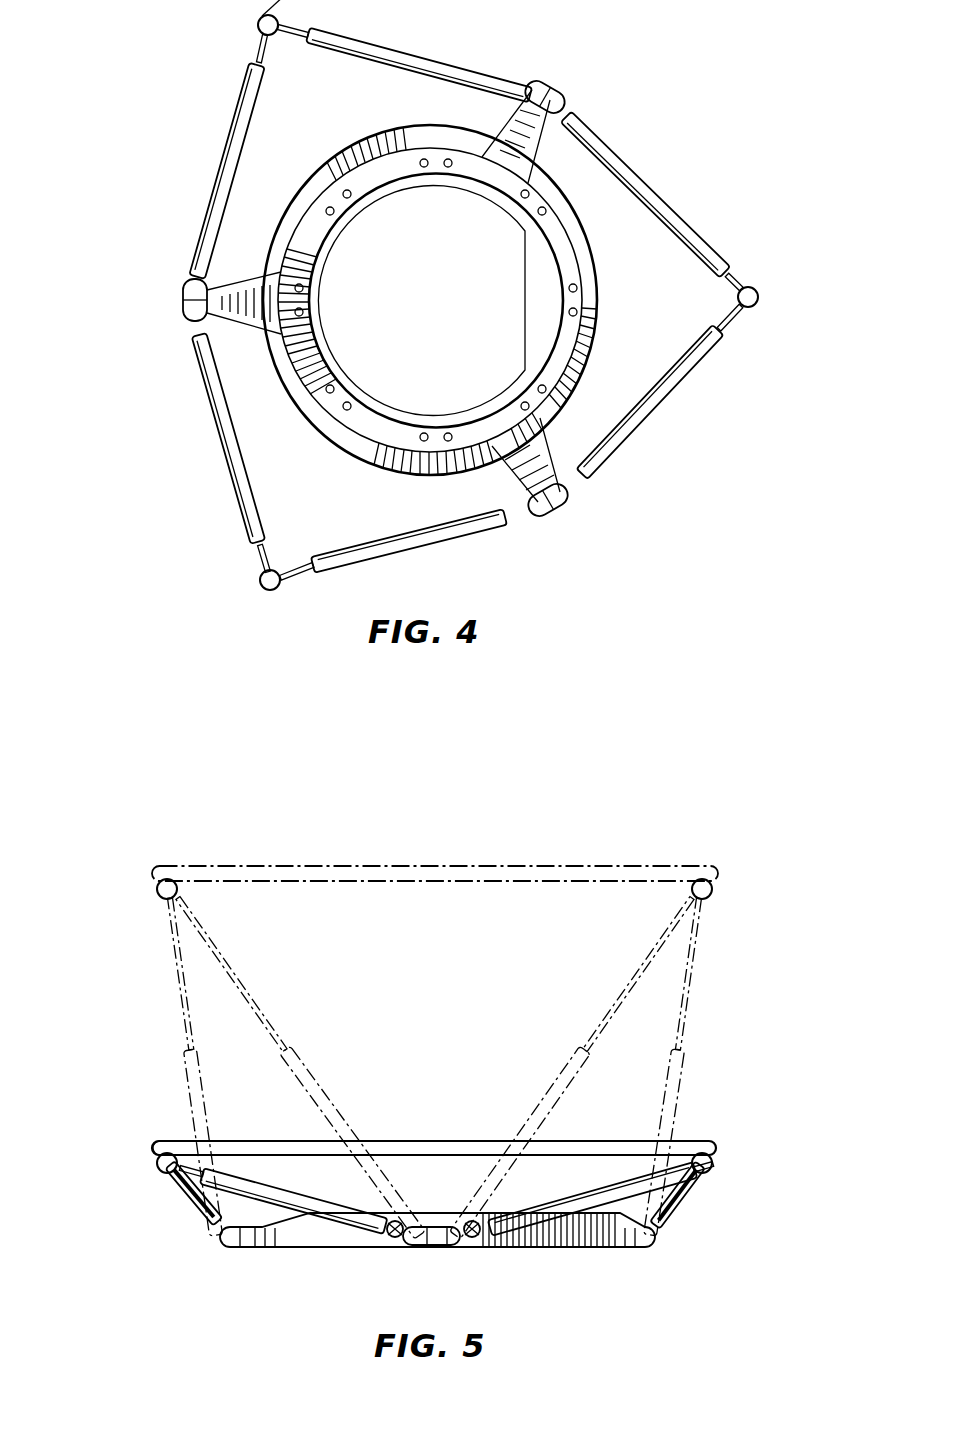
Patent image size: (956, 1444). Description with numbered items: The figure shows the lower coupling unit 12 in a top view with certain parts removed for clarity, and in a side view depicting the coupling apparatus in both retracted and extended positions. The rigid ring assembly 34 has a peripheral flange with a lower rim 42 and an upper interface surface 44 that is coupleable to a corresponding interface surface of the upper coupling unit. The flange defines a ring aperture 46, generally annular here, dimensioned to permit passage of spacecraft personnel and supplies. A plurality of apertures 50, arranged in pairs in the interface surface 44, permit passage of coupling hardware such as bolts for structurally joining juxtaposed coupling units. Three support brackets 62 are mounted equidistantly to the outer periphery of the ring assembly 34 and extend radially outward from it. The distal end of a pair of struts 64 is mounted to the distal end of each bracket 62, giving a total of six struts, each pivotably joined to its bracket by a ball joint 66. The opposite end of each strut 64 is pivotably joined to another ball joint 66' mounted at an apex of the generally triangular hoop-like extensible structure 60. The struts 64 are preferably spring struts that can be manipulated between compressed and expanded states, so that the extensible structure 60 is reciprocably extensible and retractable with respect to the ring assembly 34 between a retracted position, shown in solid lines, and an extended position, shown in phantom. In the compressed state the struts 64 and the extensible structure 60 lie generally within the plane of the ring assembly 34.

In FIG. 4, the lower coupling unit 12 is at (690, 141).
In FIG. 5, the lower coupling unit 12 is at (722, 1102).
In FIG. 4, the ring assembly 34 is at (612, 234).
In FIG. 5, the ring assembly 34 is at (540, 1247).
In FIG. 4, the lower rim 42 is at (333, 163).
In FIG. 4, the upper interface surface 44 is at (307, 240).
In FIG. 4, the ring aperture 46 is at (432, 307).
In FIG. 4, the apertures 50 is at (420, 158).
In FIG. 5, the extensible structure 60 is at (190, 1141).
In FIG. 4, the support brackets 62 is at (570, 128).
In FIG. 5, the support brackets 62 is at (432, 1246).
In FIG. 4, the struts 64 is at (432, 60).
In FIG. 5, the struts 64 is at (250, 1248).
In FIG. 4, the ball joint 66 is at (538, 67).
In FIG. 5, the ball joint 66 is at (554, 1229).
In FIG. 5, the ball joint 66' is at (740, 1151).